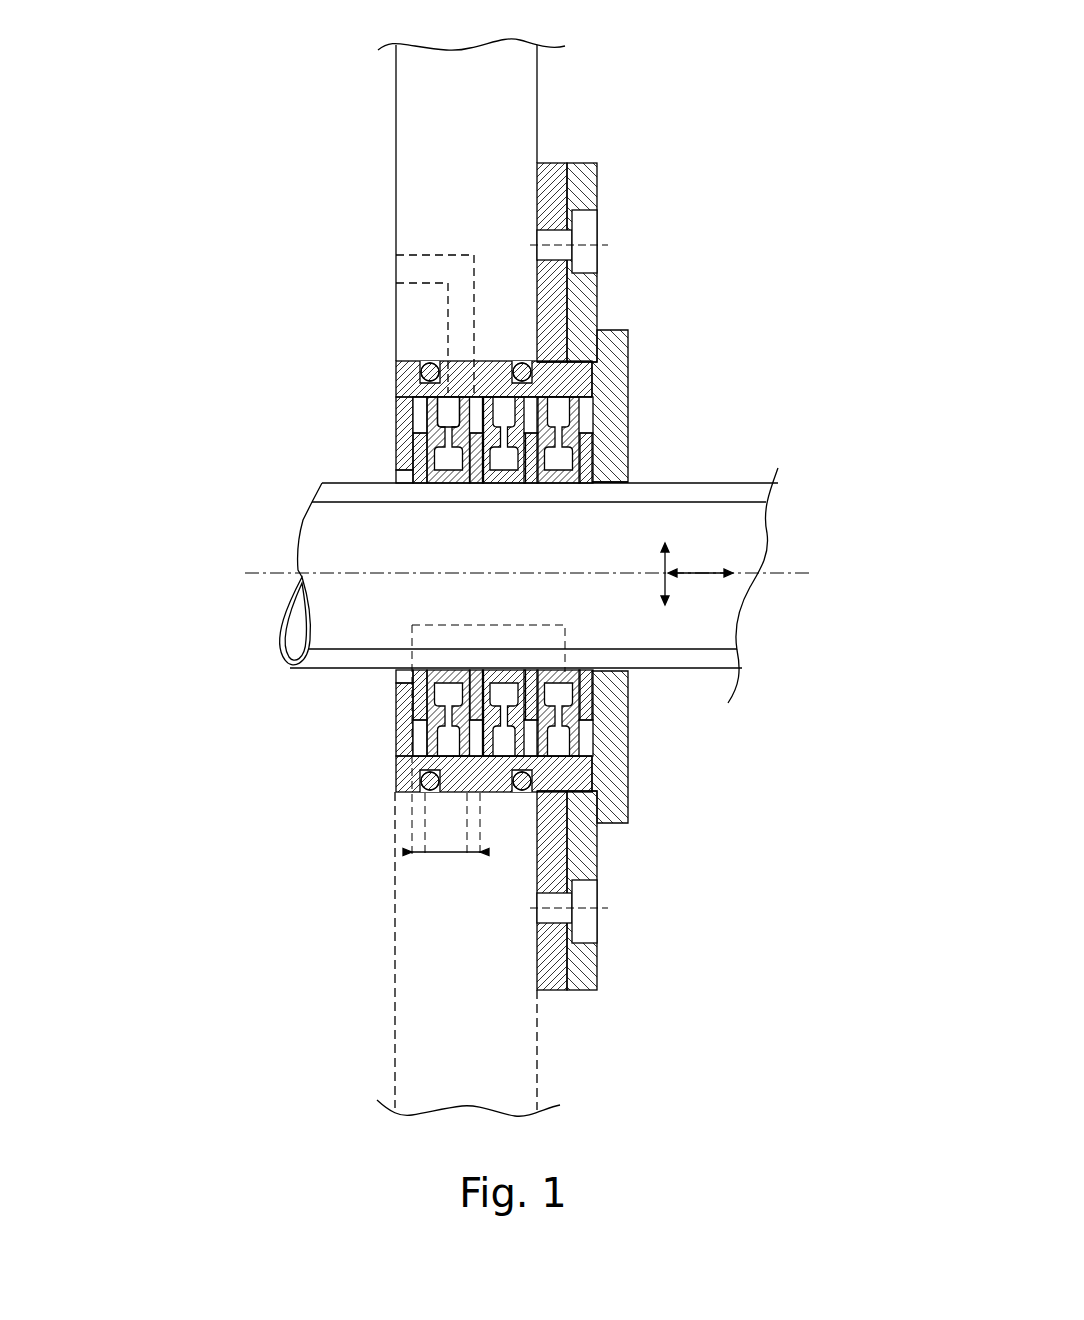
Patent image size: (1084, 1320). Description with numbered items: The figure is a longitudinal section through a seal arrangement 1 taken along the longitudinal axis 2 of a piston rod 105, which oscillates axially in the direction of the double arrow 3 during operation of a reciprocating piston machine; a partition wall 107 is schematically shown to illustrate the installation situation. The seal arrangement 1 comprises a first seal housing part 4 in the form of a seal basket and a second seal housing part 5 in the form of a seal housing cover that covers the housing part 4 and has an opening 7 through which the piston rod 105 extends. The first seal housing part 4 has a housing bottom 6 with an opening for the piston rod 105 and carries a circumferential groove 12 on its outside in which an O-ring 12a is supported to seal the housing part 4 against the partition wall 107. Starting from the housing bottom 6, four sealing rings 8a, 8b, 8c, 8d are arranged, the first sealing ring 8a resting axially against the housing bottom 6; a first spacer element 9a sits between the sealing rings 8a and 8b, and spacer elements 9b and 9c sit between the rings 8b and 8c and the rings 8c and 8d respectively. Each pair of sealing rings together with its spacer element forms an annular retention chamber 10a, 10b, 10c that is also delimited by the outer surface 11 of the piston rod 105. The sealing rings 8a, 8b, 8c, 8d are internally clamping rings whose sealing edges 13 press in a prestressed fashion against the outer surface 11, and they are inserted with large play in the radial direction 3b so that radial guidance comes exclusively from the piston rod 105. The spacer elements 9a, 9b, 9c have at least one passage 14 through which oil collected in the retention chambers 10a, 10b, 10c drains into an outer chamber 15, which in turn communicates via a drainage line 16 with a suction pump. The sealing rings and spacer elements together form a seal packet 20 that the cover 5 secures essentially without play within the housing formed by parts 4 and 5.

The seal arrangement 1 is at (338, 899).
The longitudinal axis 2 is at (783, 571).
The double arrow 3 is at (715, 567).
The radial direction 3b is at (672, 568).
The first seal housing part 4 is at (397, 370).
The second seal housing part 5 is at (600, 297).
The housing bottom 6 is at (397, 432).
The opening 7 is at (397, 476).
The first sealing ring 8a is at (396, 728).
The second sealing ring 8b is at (432, 758).
The third sealing ring 8c is at (625, 780).
The fourth sealing ring 8d is at (600, 690).
The first spacer element 9a is at (428, 740).
The spacer element 9b is at (504, 742).
The spacer element 9c is at (593, 735).
The retention chamber 10a is at (448, 683).
The retention chamber 10b is at (503, 684).
The retention chamber 10c is at (556, 686).
The outer surface 11 is at (698, 478).
The circumferential groove 12 is at (565, 378).
The O-ring 12a is at (534, 370).
The sealing edge 13 is at (430, 466).
The passage 14 is at (453, 452).
The outer chamber 15 is at (453, 415).
The drainage line 16 is at (463, 360).
The seal packet 20 is at (484, 726).
The piston rod 105 is at (292, 668).
The partition wall 107 is at (512, 113).